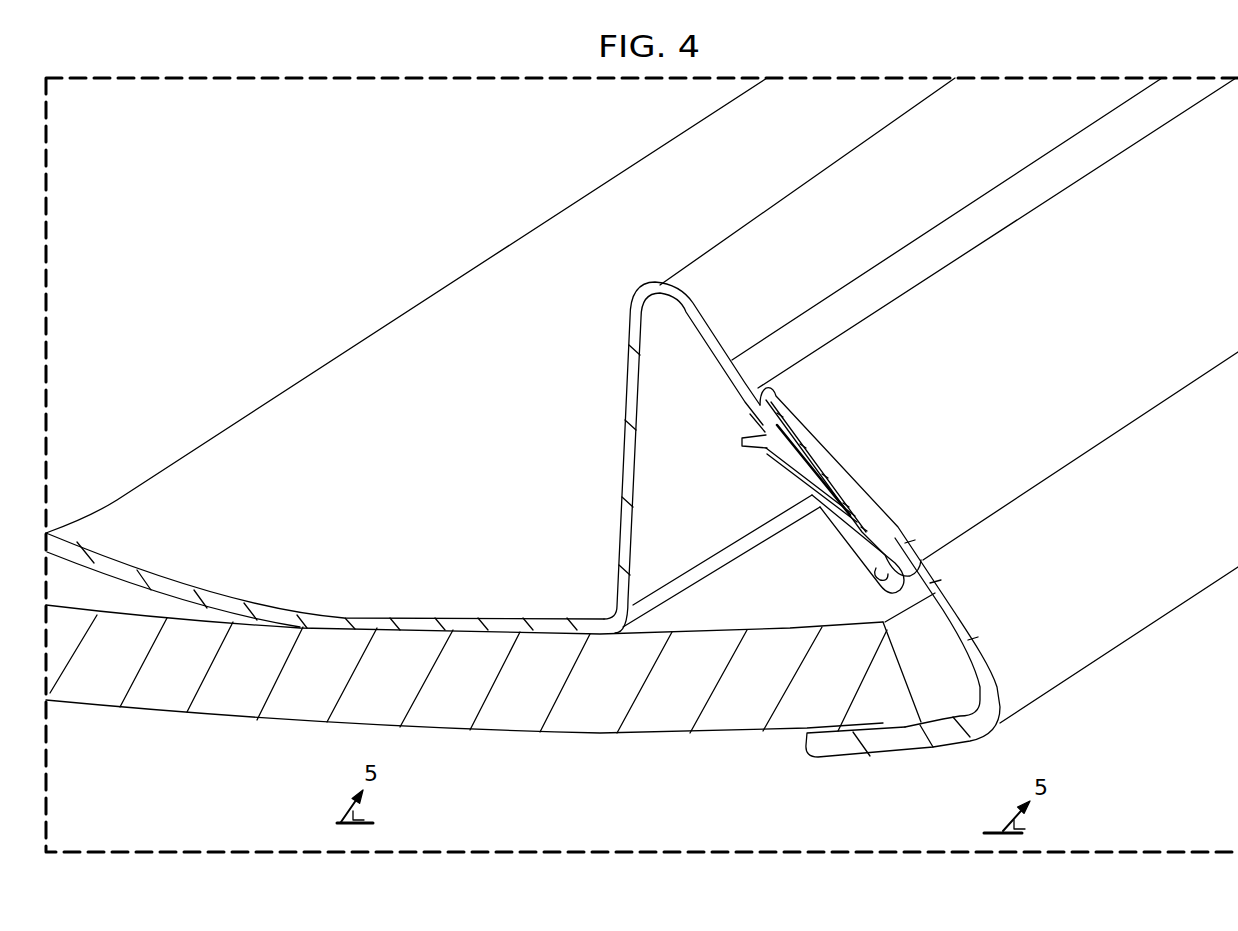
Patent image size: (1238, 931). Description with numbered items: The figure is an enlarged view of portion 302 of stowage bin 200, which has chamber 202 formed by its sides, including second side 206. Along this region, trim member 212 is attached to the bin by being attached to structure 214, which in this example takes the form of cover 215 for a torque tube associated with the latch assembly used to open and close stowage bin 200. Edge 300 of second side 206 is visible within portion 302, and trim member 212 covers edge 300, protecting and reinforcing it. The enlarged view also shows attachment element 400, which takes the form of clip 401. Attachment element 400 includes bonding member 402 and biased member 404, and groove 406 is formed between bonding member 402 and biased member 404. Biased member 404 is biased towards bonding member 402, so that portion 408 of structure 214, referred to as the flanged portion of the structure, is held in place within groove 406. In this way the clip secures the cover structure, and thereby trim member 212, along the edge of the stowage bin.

The stowage bin 200 is at (202, 134).
The chamber 202 is at (268, 555).
The second side 206 is at (506, 735).
The trim member 212 is at (1156, 627).
The structure 214 is at (322, 378).
The cover 215 is at (456, 296).
The edge 300 is at (912, 680).
The portion 302 is at (456, 74).
The attachment element 400 is at (768, 557).
The clip 401 is at (833, 546).
The bonding member 402 is at (851, 511).
The biased member 404 is at (776, 455).
The groove 406 is at (880, 572).
The portion 408 is at (785, 428).